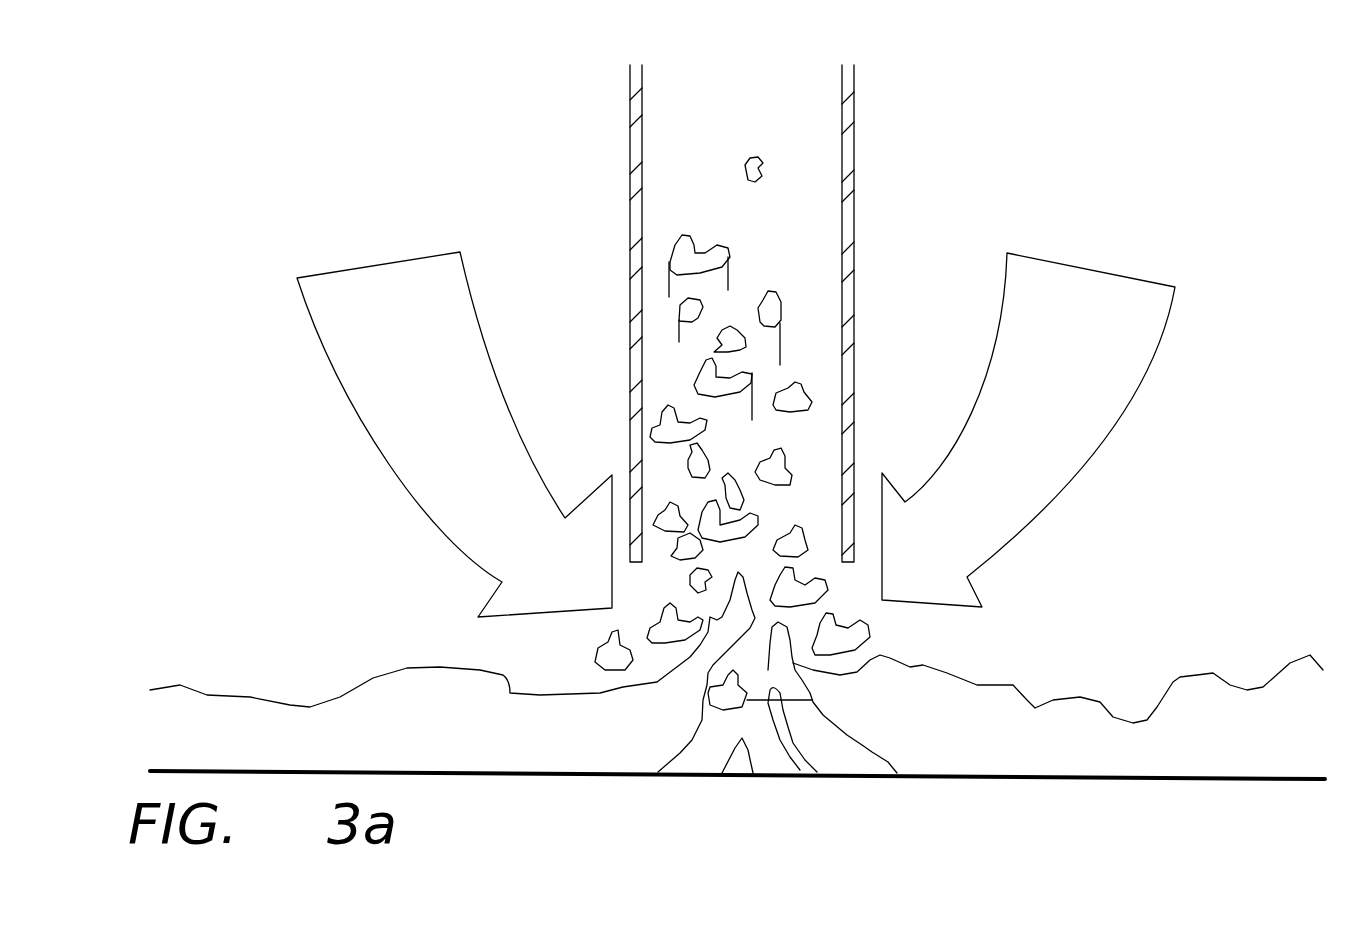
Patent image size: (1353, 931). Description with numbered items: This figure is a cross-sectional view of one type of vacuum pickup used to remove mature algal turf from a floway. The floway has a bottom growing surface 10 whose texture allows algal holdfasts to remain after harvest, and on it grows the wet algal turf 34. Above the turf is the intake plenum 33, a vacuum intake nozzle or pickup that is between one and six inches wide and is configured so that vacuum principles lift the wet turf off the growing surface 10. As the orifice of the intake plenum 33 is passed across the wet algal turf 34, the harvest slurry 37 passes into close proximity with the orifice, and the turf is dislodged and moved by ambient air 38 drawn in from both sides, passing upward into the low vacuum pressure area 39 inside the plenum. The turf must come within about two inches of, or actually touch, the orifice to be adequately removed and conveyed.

The growing surface 10 is at (1135, 773).
The intake plenum 33 is at (848, 277).
The wet algal turf 34 is at (1038, 730).
The harvest slurry 37 is at (760, 167).
The ambient air 38 is at (736, 434).
The low vacuum pressure area 39 is at (805, 237).